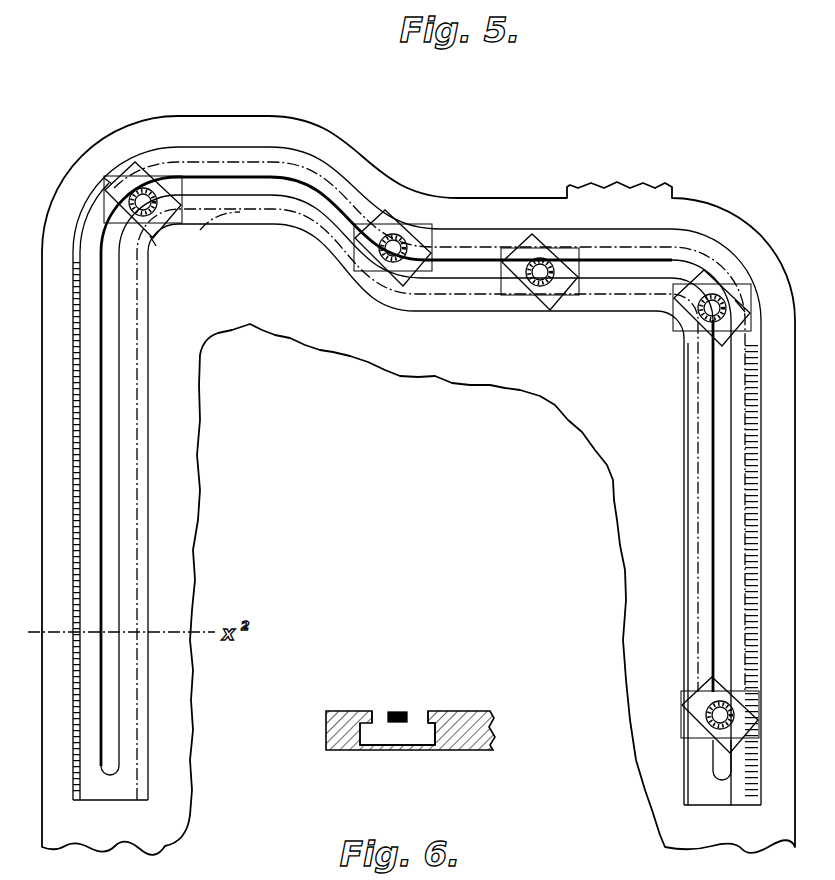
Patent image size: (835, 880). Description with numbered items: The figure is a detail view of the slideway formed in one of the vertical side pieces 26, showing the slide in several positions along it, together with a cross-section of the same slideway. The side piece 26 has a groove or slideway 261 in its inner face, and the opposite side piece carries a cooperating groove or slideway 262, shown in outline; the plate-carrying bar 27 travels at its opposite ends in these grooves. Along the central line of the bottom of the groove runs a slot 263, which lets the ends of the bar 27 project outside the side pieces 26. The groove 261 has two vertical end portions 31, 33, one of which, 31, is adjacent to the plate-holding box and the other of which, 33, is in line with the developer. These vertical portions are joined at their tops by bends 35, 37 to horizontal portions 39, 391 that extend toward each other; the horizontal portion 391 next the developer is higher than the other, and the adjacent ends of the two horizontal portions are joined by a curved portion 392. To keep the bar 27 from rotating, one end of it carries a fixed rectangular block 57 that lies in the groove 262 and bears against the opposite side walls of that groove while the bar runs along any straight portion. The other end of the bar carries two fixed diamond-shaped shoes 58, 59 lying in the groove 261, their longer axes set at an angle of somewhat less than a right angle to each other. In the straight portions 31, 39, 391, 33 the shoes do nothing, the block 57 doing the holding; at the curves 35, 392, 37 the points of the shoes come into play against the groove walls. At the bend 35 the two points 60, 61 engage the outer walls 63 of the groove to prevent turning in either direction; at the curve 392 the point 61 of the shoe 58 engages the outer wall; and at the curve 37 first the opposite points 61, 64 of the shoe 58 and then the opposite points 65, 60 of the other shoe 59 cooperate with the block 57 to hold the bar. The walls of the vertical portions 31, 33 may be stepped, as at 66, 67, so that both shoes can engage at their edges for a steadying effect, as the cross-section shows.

In FIG. 5, the side pieces 26 is at (182, 118).
In FIG. 6, the side pieces 26 is at (494, 731).
In FIG. 5, the plate-carrying bar 27 is at (375, 252).
In FIG. 5, the vertical end portion 31 is at (705, 546).
In FIG. 5, the vertical end portion 33 is at (136, 532).
In FIG. 6, the vertical end portion 33 is at (385, 733).
In FIG. 5, the bend 35 is at (687, 264).
In FIG. 5, the bend 37 is at (96, 230).
In FIG. 5, the horizontal portion 39 is at (594, 304).
In FIG. 5, the rectangular block 57 is at (579, 262).
In FIG. 5, the diamond-shaped shoe 58 is at (137, 164).
In FIG. 5, the diamond-shaped shoe 59 is at (183, 205).
In FIG. 5, the point of shoe 60 is at (172, 216).
In FIG. 5, the point of shoe 61 is at (140, 168).
In FIG. 5, the outer walls of the groove 63 is at (743, 308).
In FIG. 5, the point of shoe 64 is at (152, 240).
In FIG. 5, the point of shoe 65 is at (108, 180).
In FIG. 6, the step 66 is at (425, 735).
In FIG. 6, the step 67 is at (428, 746).
In FIG. 5, the groove or slideway 261 is at (513, 312).
In FIG. 6, the groove or slideway 261 is at (372, 714).
In FIG. 5, the groove or slideway 262 is at (463, 292).
In FIG. 5, the slot 263 is at (345, 212).
In FIG. 6, the slot 263 is at (401, 712).
In FIG. 5, the horizontal portion 391 is at (230, 214).
In FIG. 5, the curved portion 392 is at (412, 298).